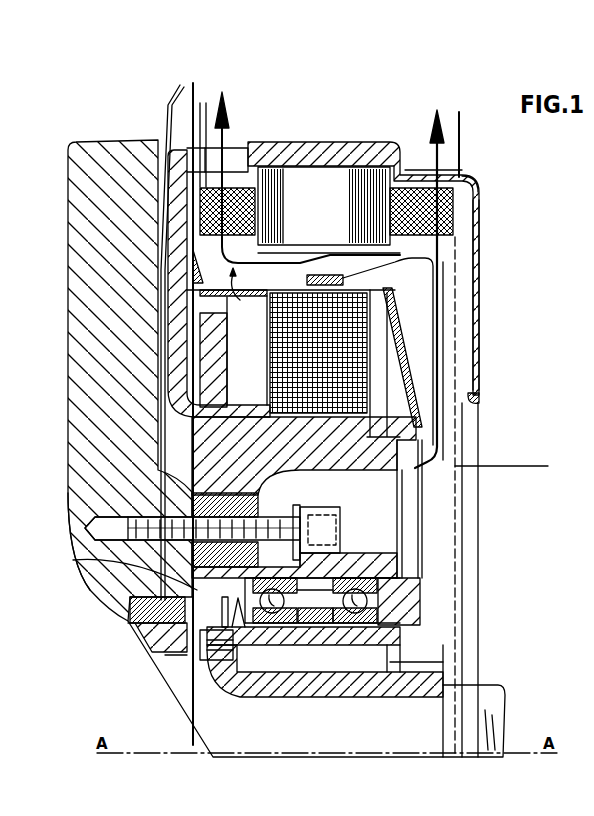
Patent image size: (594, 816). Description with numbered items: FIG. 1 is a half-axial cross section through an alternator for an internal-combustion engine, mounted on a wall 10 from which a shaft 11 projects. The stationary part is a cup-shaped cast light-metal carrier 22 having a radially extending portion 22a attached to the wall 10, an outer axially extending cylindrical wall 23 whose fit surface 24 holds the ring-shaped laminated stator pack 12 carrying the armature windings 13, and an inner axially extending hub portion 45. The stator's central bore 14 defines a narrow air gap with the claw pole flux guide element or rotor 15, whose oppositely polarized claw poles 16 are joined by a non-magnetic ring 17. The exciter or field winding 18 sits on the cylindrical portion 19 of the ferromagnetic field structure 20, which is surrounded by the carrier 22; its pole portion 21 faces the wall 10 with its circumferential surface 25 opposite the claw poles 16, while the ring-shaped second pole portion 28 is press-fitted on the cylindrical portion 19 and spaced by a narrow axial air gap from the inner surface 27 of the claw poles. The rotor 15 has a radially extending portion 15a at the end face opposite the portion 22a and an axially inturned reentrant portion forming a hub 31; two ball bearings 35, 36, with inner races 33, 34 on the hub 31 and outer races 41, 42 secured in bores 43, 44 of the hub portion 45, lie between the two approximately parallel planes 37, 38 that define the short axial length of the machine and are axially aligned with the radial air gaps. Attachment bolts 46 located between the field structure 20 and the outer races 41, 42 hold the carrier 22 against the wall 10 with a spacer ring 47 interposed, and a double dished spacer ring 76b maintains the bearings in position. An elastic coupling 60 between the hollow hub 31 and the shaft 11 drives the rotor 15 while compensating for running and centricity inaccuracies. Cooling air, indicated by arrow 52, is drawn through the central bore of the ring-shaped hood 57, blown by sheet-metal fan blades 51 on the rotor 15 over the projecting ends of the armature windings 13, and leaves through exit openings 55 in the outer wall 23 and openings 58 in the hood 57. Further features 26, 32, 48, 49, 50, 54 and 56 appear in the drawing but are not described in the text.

The wall 10 is at (104, 165).
The shaft 11 is at (492, 707).
The laminated stator pack 12 is at (320, 182).
The armature windings 13 is at (451, 213).
The central bore 14 is at (393, 251).
The claw pole flux guide element 15 is at (474, 321).
The radially extending portion 15a is at (475, 398).
The claw poles 16 is at (398, 278).
The ring 17 is at (330, 272).
The exciter or field winding 18 is at (347, 402).
The cylindrical portion 19 is at (352, 437).
The field structure 20 is at (246, 427).
The pole portion 21 is at (243, 358).
The carrier 22 is at (160, 305).
The radially extending portion 22a is at (178, 214).
The outer wall 23 is at (262, 147).
The fit surface 24 is at (297, 168).
The circumferential surface 25 is at (186, 281).
The spacer 26 is at (190, 331).
The inner surface 27 is at (468, 353).
The second pole portion 28 is at (425, 373).
The hub 31 is at (422, 644).
The spacer ring 32 is at (315, 624).
The inner race 33 is at (265, 624).
The inner race 34 is at (362, 624).
The ball bearing 35 is at (278, 624).
The ball bearing 36 is at (422, 618).
The plane 37 is at (158, 150).
The plane 38 is at (461, 114).
The outer race 41 is at (131, 608).
The outer race 42 is at (410, 591).
The bore 43 is at (98, 588).
The bore 44 is at (390, 586).
The hub portion 45 is at (320, 572).
The attachment bolts 46 is at (86, 562).
The spacer ring 47 is at (187, 513).
The gap 48 is at (118, 623).
The support block 49 is at (119, 635).
The edge 50 is at (167, 656).
The fan blades 51 is at (451, 340).
The arrow 52 is at (542, 465).
The grommet 54 is at (417, 158).
The exit openings 55 is at (228, 130).
The outlet 56 is at (235, 153).
The hood 57 is at (481, 181).
The openings 58 is at (418, 176).
The elastic coupling 60 is at (447, 669).
The double dished spacer ring 76b is at (233, 665).